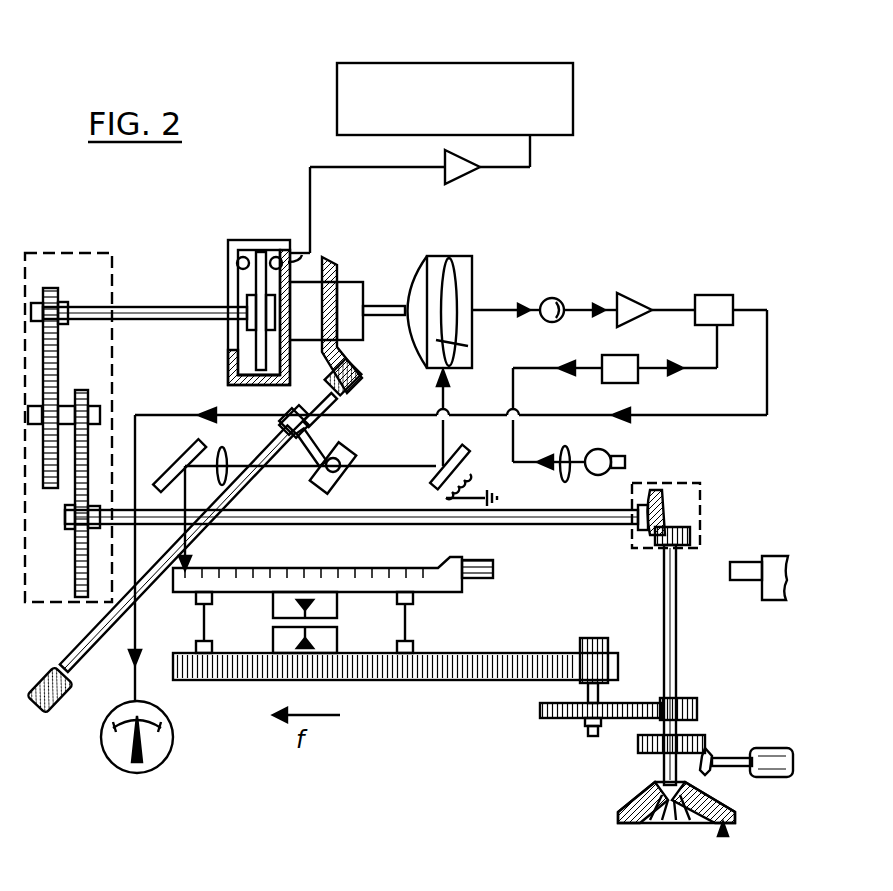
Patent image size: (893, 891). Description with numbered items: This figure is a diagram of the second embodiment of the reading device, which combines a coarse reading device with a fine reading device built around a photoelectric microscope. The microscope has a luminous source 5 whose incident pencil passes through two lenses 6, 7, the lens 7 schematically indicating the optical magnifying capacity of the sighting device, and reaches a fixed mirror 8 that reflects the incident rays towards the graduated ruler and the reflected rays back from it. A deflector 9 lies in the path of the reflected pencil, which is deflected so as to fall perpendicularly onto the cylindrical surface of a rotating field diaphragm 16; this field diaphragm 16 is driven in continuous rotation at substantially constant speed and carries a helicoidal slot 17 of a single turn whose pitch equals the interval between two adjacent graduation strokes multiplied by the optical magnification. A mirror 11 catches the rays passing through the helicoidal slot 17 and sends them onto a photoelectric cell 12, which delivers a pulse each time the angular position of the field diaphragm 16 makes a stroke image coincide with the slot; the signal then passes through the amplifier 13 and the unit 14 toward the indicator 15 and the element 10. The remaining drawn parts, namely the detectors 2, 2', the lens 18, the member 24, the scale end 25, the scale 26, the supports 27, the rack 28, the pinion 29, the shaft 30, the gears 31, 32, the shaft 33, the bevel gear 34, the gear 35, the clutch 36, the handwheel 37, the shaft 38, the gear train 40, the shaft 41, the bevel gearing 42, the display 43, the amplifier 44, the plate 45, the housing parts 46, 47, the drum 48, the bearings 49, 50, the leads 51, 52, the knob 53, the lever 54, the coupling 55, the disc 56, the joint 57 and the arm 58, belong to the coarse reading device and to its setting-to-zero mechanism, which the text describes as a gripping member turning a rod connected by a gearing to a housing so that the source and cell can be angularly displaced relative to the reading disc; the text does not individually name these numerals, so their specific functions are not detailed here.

The detector 2 is at (321, 606).
The detector 2' is at (324, 641).
The luminous source 5 is at (598, 478).
The lens 6 is at (567, 452).
The lens 7 is at (232, 448).
The fixed mirror 8 is at (168, 474).
The deflector 9 is at (428, 487).
The oscillator 10 is at (575, 408).
The mirror 11 is at (462, 296).
The photoelectric cell 12 is at (554, 298).
The amplifier 13 is at (636, 294).
The phase discriminator 14 is at (451, 358).
The meter 15 is at (162, 739).
The field diaphragm 16 is at (462, 368).
The helicoidal slot 17 is at (470, 344).
The lens 18 is at (414, 276).
The counter 24 is at (740, 562).
The scale end 25 is at (493, 566).
The scale 26 is at (334, 570).
The supports 27 is at (206, 626).
The rack 28 is at (420, 682).
The pinion 29 is at (594, 638).
The shaft 30 is at (600, 692).
The gear 31 is at (548, 718).
The gear 32 is at (698, 708).
The shaft 33 is at (676, 642).
The bevel gear 34 is at (665, 820).
The gear 35 is at (642, 754).
The clutch 36 is at (712, 760).
The handwheel 37 is at (770, 748).
The shaft 38 is at (138, 308).
The gear train 40 is at (68, 427).
The shaft 41 is at (246, 526).
The bevel gearing 42 is at (667, 515).
The digital display 43 is at (441, 72).
The amplifier 44 is at (462, 162).
The pendulum plate 45 is at (255, 345).
The housing bottom 46 is at (262, 385).
The housing 47 is at (258, 242).
The drum 48 is at (347, 311).
The bearing 49 is at (236, 270).
The bearing 50 is at (238, 260).
The lead 51 is at (300, 258).
The lead 52 is at (306, 246).
The knob 53 is at (62, 712).
The lever 54 is at (86, 656).
The coupling 55 is at (356, 384).
The disc 56 is at (324, 355).
The joint 57 is at (290, 452).
The arm 58 is at (348, 462).